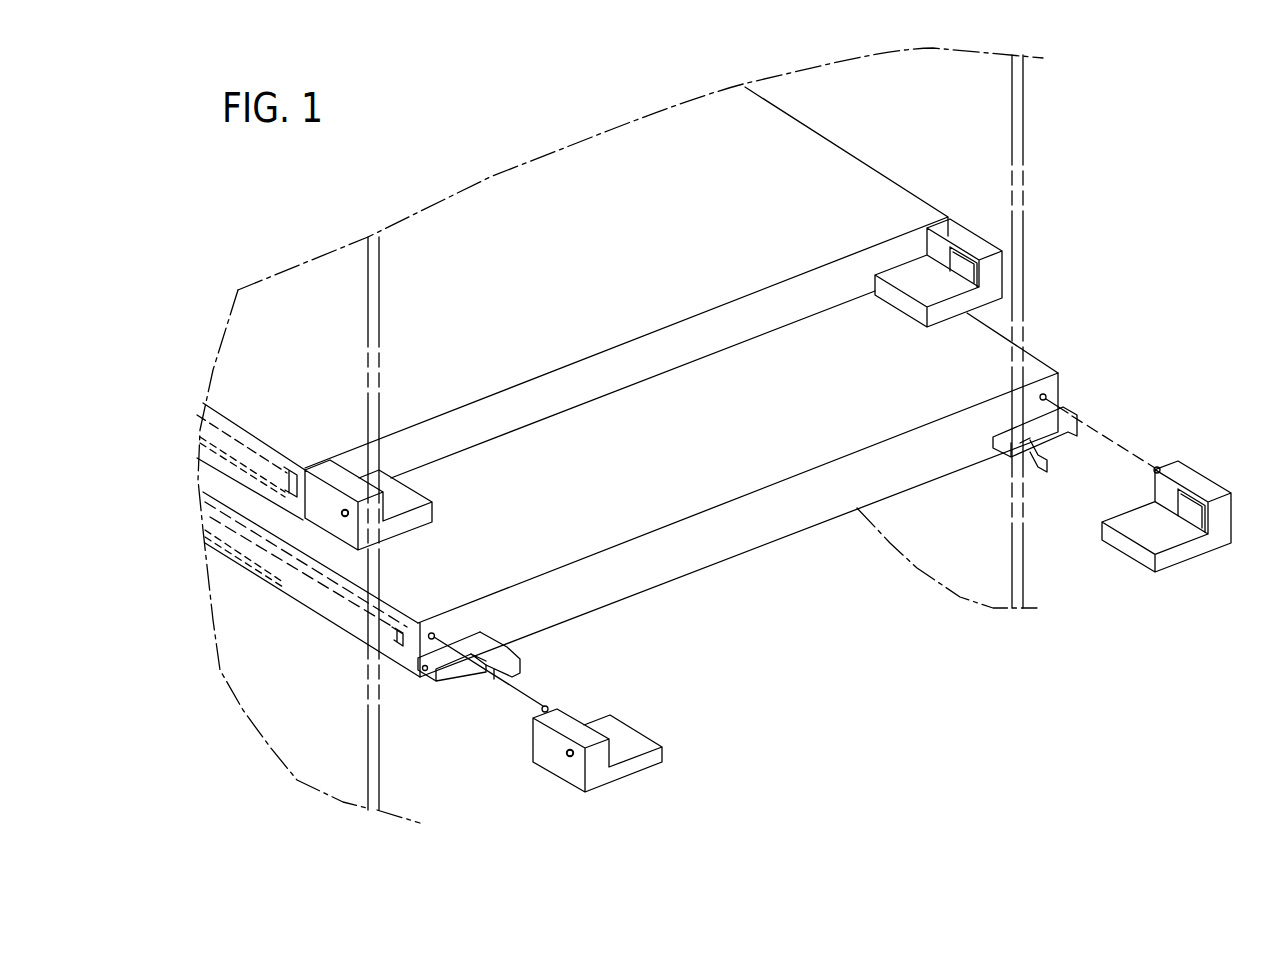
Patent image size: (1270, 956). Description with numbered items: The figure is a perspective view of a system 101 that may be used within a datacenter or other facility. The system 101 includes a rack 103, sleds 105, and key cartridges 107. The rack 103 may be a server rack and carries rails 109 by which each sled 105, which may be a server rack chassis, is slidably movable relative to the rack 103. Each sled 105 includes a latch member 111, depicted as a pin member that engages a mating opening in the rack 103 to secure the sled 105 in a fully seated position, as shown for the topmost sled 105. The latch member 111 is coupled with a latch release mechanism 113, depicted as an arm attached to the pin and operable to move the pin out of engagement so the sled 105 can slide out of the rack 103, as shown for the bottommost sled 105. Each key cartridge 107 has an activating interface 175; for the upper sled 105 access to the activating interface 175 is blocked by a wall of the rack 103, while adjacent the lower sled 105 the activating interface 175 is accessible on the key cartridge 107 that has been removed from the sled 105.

The system 101 is at (1147, 205).
The rack 103 is at (241, 324).
The sled 105 is at (575, 408).
The key cartridge 107 is at (641, 762).
The rail 109 is at (326, 596).
The latch member 111 is at (423, 667).
The latch release mechanism 113 is at (486, 675).
The activating interface 175 is at (343, 514).